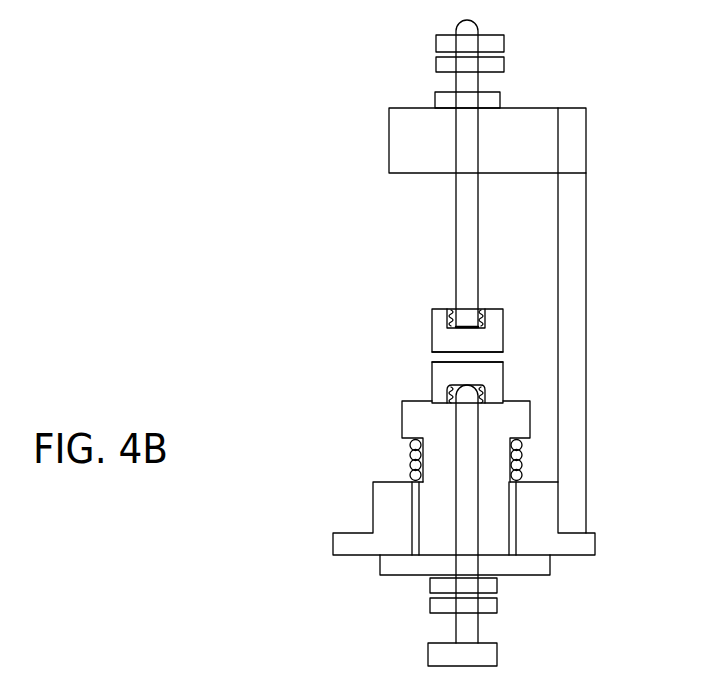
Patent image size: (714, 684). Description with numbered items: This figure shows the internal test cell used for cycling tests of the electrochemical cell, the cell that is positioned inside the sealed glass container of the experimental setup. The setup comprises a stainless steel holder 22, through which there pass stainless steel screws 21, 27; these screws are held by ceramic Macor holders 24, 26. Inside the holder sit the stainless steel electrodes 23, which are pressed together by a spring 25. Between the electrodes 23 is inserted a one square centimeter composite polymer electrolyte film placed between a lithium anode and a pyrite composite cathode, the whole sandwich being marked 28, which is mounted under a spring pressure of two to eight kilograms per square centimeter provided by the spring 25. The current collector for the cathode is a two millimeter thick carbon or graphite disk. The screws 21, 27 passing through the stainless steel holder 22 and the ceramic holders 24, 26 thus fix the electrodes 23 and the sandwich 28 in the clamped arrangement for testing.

The stainless steel screw 21 is at (463, 86).
The stainless steel holder 22 is at (572, 203).
The stainless steel electrodes 23 is at (488, 374).
The ceramic (Macor) holder 24 is at (415, 422).
The spring 25 is at (520, 472).
The ceramic (Macor) holder 26 is at (570, 540).
The stainless steel screw 27 is at (460, 625).
The sandwich of lithium anode, composite polymer electrolyte film and pyrite composi 28 is at (432, 358).